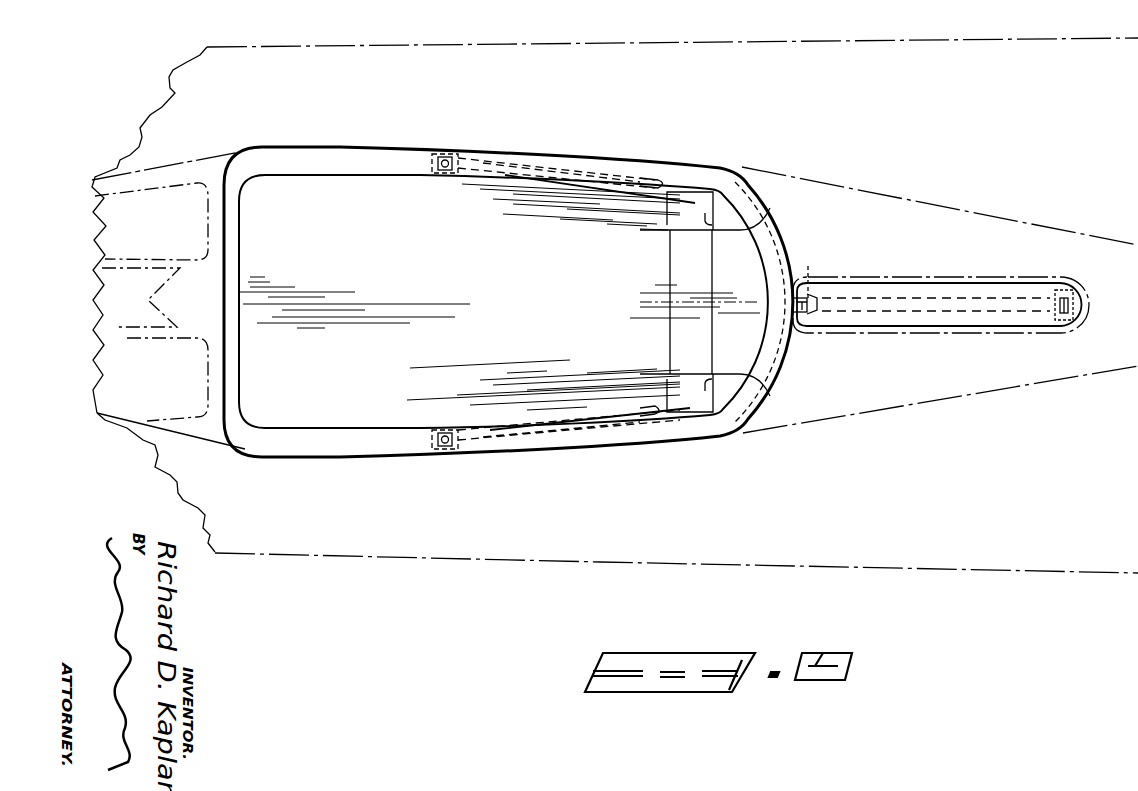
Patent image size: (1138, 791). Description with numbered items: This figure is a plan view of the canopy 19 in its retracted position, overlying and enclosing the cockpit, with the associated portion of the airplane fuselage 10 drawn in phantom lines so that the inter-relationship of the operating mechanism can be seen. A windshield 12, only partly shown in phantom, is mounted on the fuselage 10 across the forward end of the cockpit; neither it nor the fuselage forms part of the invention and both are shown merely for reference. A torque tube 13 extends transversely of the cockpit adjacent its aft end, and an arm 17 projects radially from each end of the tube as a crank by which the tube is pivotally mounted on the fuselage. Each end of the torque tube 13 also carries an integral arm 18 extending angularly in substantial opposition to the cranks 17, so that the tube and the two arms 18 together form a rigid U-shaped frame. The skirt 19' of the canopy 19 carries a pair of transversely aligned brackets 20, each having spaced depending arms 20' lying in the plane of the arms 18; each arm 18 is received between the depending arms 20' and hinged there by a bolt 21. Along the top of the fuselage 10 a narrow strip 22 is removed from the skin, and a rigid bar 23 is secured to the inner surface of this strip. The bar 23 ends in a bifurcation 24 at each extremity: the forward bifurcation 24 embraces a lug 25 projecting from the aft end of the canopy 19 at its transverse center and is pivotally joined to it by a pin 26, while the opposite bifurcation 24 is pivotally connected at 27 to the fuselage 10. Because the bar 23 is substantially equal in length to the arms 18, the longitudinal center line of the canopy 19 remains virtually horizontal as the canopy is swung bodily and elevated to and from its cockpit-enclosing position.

The airplane fuselage 10 is at (897, 550).
The windshield 12 is at (194, 167).
The torque tube 13 is at (706, 333).
The arm 17 is at (770, 208).
The arm 18 is at (612, 186).
The canopy 19 is at (503, 274).
The skirt 19' is at (508, 288).
The bracket 20 is at (439, 145).
The depending arms 20' is at (429, 459).
The bolt 21 is at (456, 153).
The strip 22 is at (925, 320).
The bar 23 is at (915, 298).
The bifurcation 24 is at (821, 294).
The lug 25 is at (794, 305).
The pin 26 is at (808, 275).
The pivotal connection 27 is at (1060, 290).